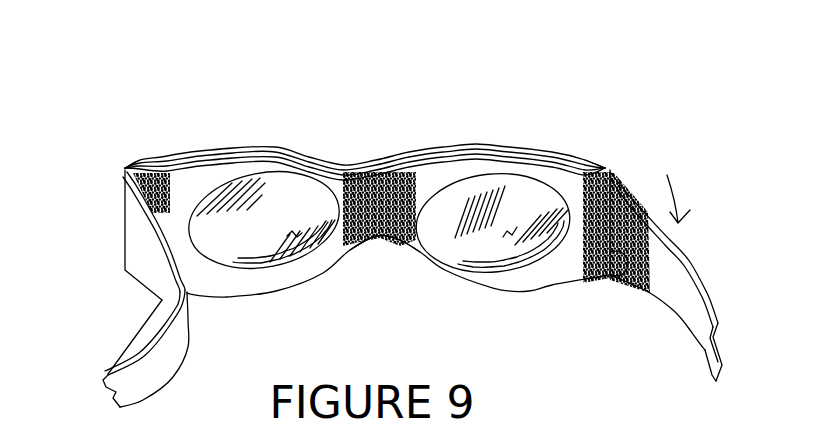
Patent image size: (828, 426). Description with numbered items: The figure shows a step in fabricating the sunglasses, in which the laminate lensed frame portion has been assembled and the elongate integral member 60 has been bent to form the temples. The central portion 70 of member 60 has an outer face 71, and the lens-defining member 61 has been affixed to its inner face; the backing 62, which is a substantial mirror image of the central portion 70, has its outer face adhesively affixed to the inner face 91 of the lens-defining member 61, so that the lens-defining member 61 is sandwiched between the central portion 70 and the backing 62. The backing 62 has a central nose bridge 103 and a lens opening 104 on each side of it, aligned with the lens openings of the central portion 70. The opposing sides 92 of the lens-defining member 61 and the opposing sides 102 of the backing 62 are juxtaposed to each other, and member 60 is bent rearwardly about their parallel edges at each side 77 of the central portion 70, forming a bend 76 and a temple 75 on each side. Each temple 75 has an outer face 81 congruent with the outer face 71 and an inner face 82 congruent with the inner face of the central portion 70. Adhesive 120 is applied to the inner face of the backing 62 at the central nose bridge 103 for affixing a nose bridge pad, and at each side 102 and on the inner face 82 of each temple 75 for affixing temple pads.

The elongate integral member 60 is at (708, 255).
The lens-defining member 61 is at (489, 157).
The backing 62 is at (503, 288).
The central portion 70 is at (449, 143).
The outer face 71 is at (302, 132).
The temple 75 is at (162, 300).
The bend 76 is at (125, 207).
The side 77 is at (133, 170).
The outer face 81 is at (90, 285).
The inner face 82 is at (173, 353).
The inner face 91 is at (260, 240).
The side 92 is at (127, 167).
The side 102 is at (125, 168).
The central nose bridge 103 is at (403, 246).
The lens opening 104 is at (302, 236).
The adhesive 120 is at (153, 187).